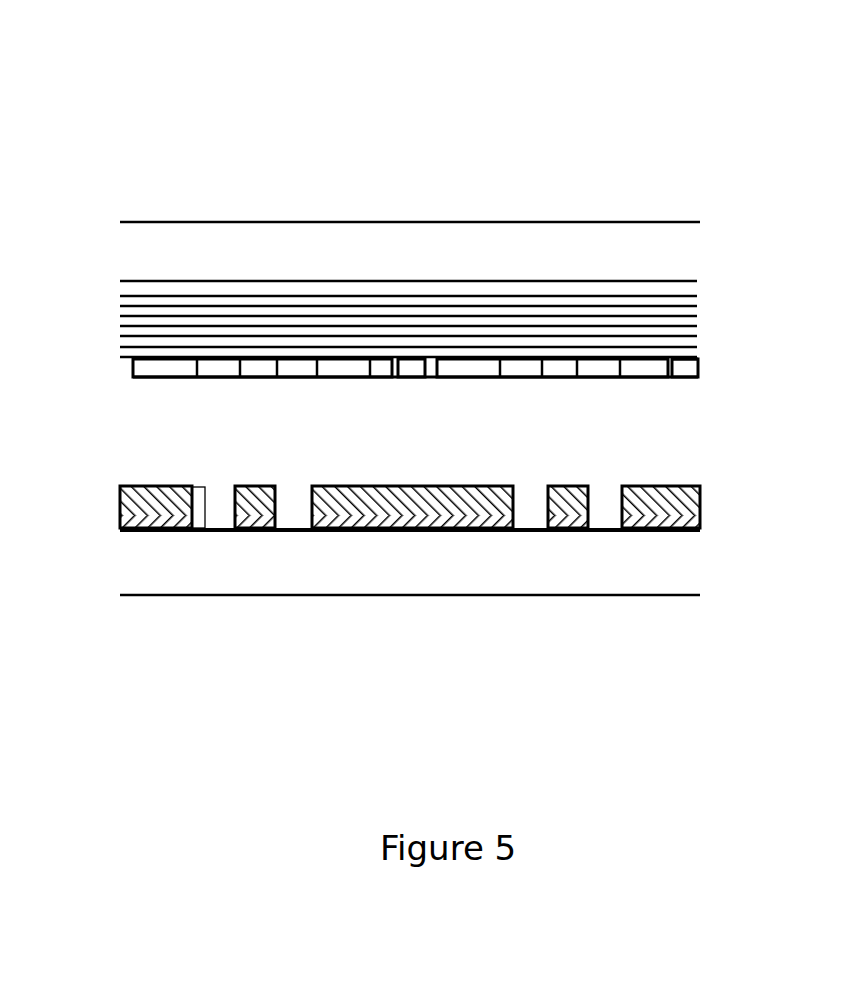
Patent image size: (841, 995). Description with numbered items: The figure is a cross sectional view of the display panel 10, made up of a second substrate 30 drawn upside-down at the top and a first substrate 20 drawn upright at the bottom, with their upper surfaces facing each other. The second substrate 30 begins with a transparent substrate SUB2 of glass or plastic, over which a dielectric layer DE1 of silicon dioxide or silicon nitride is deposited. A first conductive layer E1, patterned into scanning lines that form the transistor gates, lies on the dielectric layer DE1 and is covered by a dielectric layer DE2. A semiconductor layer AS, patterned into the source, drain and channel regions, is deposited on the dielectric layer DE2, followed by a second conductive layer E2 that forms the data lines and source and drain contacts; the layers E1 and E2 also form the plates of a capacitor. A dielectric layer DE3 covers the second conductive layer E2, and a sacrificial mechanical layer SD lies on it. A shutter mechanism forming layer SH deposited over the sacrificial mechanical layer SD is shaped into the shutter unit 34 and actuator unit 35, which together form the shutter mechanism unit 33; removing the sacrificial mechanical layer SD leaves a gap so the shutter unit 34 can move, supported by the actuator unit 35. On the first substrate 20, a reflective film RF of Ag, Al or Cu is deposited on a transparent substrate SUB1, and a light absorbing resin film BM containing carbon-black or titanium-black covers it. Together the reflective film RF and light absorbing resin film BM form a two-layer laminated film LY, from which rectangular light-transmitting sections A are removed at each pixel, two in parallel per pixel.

The display panel 10 is at (410, 181).
The second substrate 30 is at (104, 218).
The transparent substrate SUB2 is at (480, 242).
The dielectric layer DE1 is at (695, 284).
The first conductive layer E1 is at (697, 299).
The dielectric layer DE2 is at (698, 308).
The semiconductor layer AS is at (698, 320).
The second conductive layer E2 is at (698, 343).
The dielectric layer DE3 is at (698, 354).
The sacrificial mechanical layer SD is at (701, 369).
The shutter mechanism forming layer SH is at (693, 380).
The shutter mechanism unit 33 is at (294, 393).
The shutter unit 34 is at (268, 381).
The actuator unit 35 is at (382, 380).
The first substrate 20 is at (104, 447).
The light absorbing resin film BM is at (703, 504).
The two-layer laminated film LY is at (205, 507).
The light-transmitting section A is at (233, 481).
The reflective film RF is at (706, 533).
The transparent substrate SUB1 is at (492, 565).